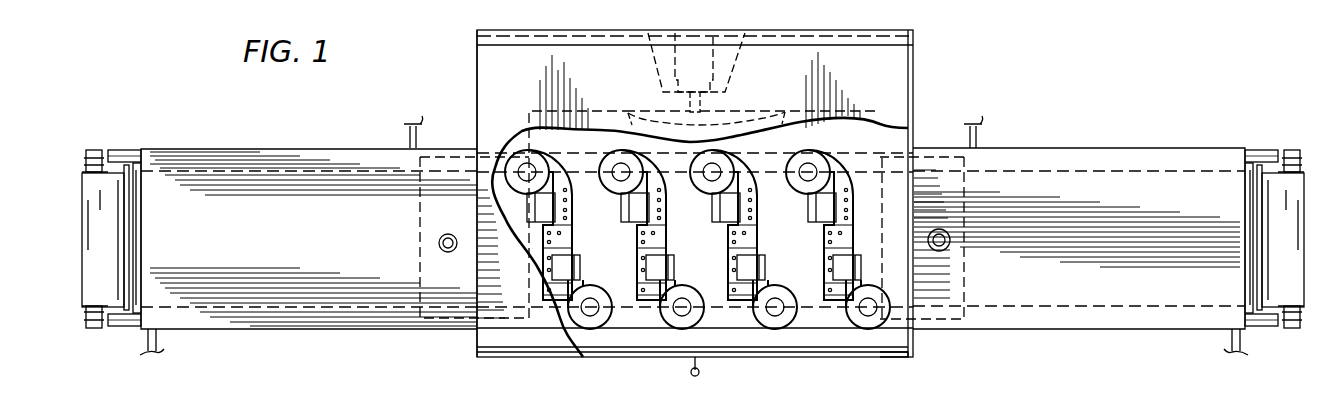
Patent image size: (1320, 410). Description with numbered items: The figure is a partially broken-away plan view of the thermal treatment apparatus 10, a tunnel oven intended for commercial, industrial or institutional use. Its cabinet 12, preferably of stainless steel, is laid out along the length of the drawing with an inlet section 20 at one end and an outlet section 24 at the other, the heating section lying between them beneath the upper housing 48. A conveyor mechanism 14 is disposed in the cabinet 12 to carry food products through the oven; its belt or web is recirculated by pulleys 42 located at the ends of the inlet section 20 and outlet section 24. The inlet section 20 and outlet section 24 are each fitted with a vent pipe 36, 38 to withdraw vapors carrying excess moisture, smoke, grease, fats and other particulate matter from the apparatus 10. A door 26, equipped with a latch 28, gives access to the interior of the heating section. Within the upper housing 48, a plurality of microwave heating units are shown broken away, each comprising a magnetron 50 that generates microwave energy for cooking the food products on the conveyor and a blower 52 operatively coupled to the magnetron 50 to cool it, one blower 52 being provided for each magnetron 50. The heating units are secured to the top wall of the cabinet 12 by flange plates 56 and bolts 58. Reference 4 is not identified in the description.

The end bolt bracket 4 is at (1285, 150).
The thermal treatment apparatus 10 is at (996, 59).
The cabinet 12 is at (238, 336).
The conveyor mechanism 14 is at (112, 186).
The inlet section 20 is at (298, 148).
The outlet section 24 is at (1046, 148).
The door 26 is at (882, 358).
The latch 28 is at (700, 374).
The vent pipe 36 is at (438, 243).
The vent pipe 38 is at (945, 252).
The pulleys 42 is at (106, 162).
The upper housing 48 is at (480, 70).
The magnetron 50 is at (624, 206).
The blower 52 is at (630, 295).
The flange plates 56 is at (826, 220).
The bolts 58 is at (730, 282).